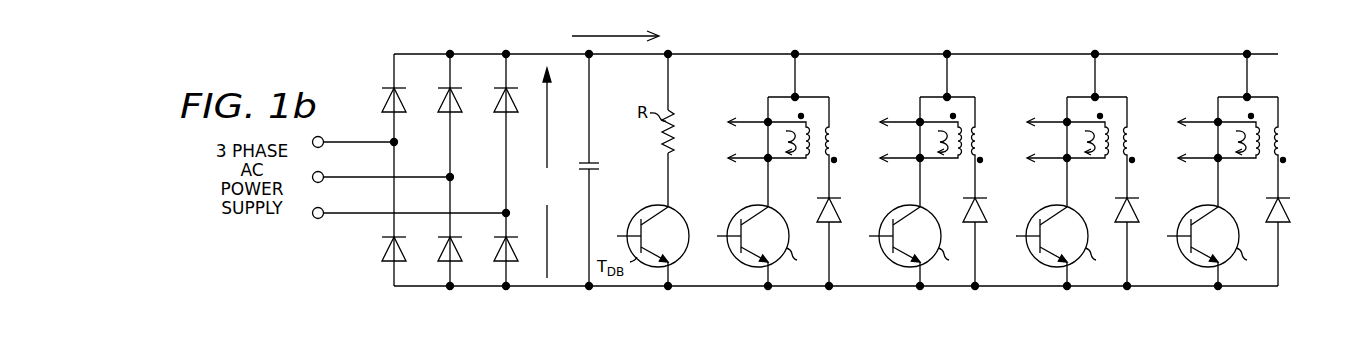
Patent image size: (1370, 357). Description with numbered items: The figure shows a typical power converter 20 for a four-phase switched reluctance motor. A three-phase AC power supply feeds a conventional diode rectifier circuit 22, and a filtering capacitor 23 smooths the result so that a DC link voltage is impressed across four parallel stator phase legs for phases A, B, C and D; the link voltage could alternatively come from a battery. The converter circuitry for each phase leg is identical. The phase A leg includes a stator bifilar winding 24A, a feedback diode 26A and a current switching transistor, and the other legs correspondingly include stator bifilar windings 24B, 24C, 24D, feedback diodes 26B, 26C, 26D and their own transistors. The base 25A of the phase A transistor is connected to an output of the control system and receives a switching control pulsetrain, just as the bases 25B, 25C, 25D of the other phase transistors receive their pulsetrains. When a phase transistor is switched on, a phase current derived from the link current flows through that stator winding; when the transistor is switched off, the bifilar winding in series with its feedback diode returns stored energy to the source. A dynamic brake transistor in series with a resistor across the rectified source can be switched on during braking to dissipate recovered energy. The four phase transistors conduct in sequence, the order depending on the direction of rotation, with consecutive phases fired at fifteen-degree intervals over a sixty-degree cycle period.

The power converter 20 is at (1230, 44).
The diode rectifier circuit 22 is at (487, 156).
The filtering capacitor 23 is at (600, 165).
The stator bifilar winding 24A is at (831, 127).
The stator bifilar winding 24B is at (977, 127).
The stator bifilar winding 24C is at (1129, 127).
The stator bifilar winding 24D is at (1280, 127).
The base of transistor 25A is at (741, 252).
The base of transistor 25B is at (893, 252).
The base of transistor 25C is at (1040, 252).
The base of transistor 25D is at (1191, 252).
The feedback diode 26A is at (838, 212).
The feedback diode 26B is at (984, 212).
The feedback diode 26C is at (1136, 212).
The feedback diode 26D is at (1287, 212).